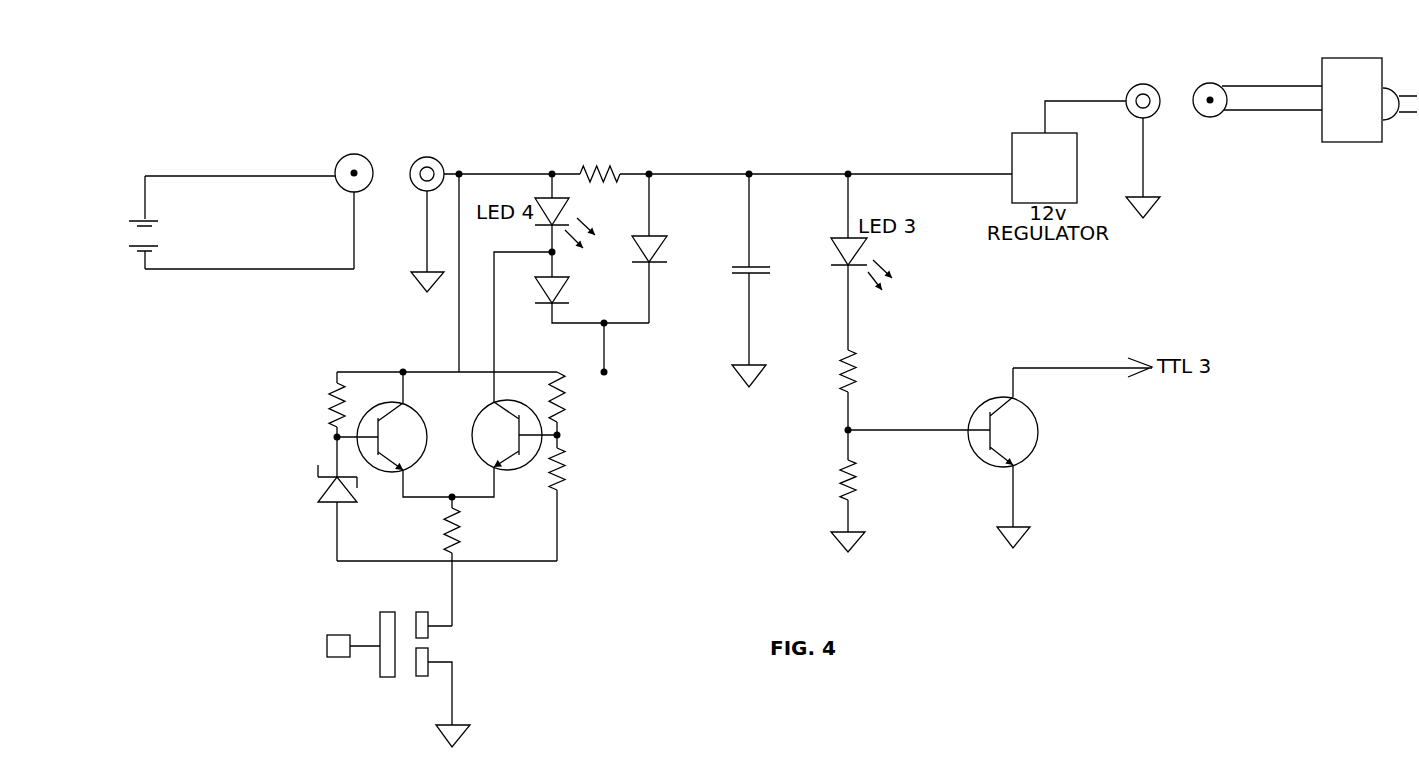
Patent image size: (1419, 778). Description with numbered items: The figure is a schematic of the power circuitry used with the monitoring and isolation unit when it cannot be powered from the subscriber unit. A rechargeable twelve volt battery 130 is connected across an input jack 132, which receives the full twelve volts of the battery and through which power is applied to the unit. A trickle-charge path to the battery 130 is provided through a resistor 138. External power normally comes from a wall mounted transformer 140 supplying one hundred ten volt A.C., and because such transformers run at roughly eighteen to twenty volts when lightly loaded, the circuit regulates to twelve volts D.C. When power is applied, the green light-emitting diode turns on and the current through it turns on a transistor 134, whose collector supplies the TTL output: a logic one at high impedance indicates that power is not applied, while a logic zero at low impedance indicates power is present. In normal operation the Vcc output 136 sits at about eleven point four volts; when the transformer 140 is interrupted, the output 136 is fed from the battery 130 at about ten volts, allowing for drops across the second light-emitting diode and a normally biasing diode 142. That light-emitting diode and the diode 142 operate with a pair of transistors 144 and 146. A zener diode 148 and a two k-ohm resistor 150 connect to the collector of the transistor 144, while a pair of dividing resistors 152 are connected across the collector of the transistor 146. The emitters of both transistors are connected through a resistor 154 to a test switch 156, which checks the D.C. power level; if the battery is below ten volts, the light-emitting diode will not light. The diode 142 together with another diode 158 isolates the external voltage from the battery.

The twelve volt battery 130 is at (140, 233).
The input jack 132 is at (418, 158).
The transistor 134 is at (984, 402).
The output 136 is at (610, 370).
The resistor 138 is at (602, 166).
The wall mounted transformer 140 is at (1322, 58).
The normally biasing diode 142 is at (567, 282).
The transistor 144 is at (418, 455).
The transistor 146 is at (482, 408).
The zener diode 148 is at (327, 500).
The resistor 150 is at (330, 394).
The dividing resistors 152 is at (563, 413).
The resistor 154 is at (463, 531).
The test switch 156 is at (435, 645).
The diode 158 is at (658, 232).